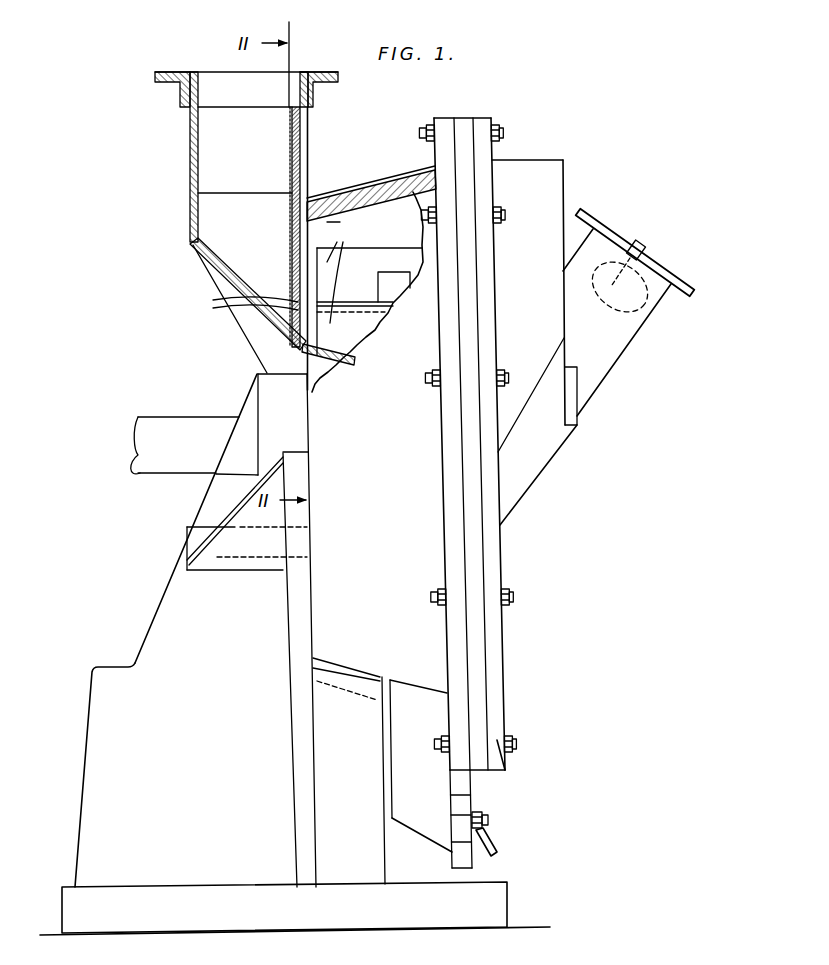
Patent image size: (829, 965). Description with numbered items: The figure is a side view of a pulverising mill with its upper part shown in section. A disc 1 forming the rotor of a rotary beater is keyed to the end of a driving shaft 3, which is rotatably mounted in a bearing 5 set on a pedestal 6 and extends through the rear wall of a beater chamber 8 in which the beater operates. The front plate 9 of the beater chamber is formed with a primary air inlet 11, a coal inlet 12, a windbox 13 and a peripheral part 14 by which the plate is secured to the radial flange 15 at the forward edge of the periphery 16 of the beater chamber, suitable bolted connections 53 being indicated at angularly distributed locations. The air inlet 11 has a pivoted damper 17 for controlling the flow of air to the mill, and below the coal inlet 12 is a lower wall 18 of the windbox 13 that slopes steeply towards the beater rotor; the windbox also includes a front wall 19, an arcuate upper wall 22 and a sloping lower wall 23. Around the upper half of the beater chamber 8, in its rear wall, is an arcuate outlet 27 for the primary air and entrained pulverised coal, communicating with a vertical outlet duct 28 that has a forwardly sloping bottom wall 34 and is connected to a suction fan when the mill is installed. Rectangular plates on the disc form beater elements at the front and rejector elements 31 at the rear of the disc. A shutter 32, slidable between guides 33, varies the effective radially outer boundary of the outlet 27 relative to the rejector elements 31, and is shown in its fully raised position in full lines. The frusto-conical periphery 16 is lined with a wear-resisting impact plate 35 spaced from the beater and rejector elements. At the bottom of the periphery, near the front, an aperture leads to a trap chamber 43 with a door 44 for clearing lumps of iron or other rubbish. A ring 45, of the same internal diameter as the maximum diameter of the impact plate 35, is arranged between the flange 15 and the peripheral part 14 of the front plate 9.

The disc 1 is at (390, 291).
The driving shaft 3 is at (178, 430).
The bearing 5 is at (267, 390).
The pedestal 6 is at (177, 642).
The beater chamber 8 is at (330, 222).
The front plate 9 is at (503, 702).
The primary air inlet 11 is at (622, 338).
The coal inlet 12 is at (573, 404).
The windbox 13 is at (547, 210).
The peripheral part 14 is at (499, 762).
The radial flange 15 is at (443, 142).
The periphery 16 is at (375, 192).
The pivoted damper 17 is at (643, 259).
The lower wall 18 is at (505, 493).
The front wall 19 is at (572, 180).
The arcuate upper wall 22 is at (512, 160).
The sloping lower wall 23 is at (515, 425).
The arcuate outlet 27 is at (273, 323).
The vertical outlet duct 28 is at (227, 137).
The rejector elements 31 is at (338, 272).
The shutter 32 is at (290, 143).
The guides 33 is at (292, 193).
The forwardly sloping bottom wall 34 is at (222, 266).
The impact plate 35 is at (408, 180).
The trap chamber 43 is at (437, 810).
The door 44 is at (465, 863).
The ring 45 is at (483, 648).
The bolted connections 53 is at (502, 130).